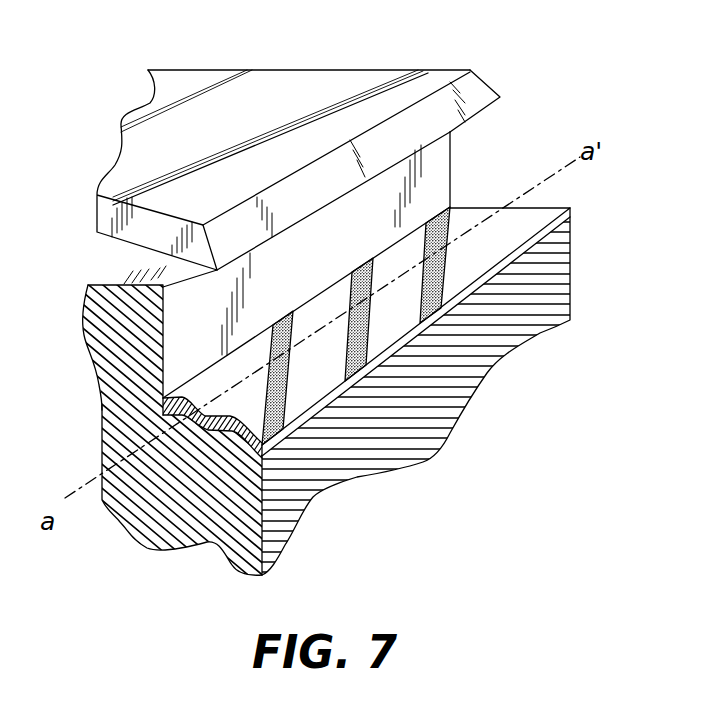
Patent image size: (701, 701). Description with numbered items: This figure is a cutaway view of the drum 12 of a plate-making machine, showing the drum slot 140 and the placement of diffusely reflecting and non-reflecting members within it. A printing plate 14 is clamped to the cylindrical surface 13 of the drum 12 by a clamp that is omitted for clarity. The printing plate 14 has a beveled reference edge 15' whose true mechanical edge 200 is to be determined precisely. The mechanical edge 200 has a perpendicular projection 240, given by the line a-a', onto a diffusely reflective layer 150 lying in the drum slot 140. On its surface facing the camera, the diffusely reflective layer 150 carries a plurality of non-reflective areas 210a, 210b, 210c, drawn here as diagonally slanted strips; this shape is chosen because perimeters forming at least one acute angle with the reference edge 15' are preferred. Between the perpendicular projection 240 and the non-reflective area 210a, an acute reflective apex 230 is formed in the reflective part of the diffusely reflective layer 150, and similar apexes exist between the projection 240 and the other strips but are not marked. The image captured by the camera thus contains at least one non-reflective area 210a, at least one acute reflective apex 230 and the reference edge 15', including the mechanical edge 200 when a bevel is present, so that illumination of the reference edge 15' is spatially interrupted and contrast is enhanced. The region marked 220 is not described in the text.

The drum 12 is at (270, 573).
The cylindrical surface 13 is at (117, 274).
The printing plate 14 is at (307, 78).
The reference edge 15' is at (342, 151).
The drum slot 140 is at (437, 170).
The diffusely reflective layer 150 is at (570, 210).
The mechanical edge 200 is at (487, 108).
The non-reflective area 210a is at (282, 402).
The non-reflective area 210b is at (370, 332).
The non-reflective area 210c is at (447, 277).
The channel floor layer 220 is at (208, 390).
The acute reflective apex 230 is at (245, 355).
The perpendicular projection 240 is at (557, 170).